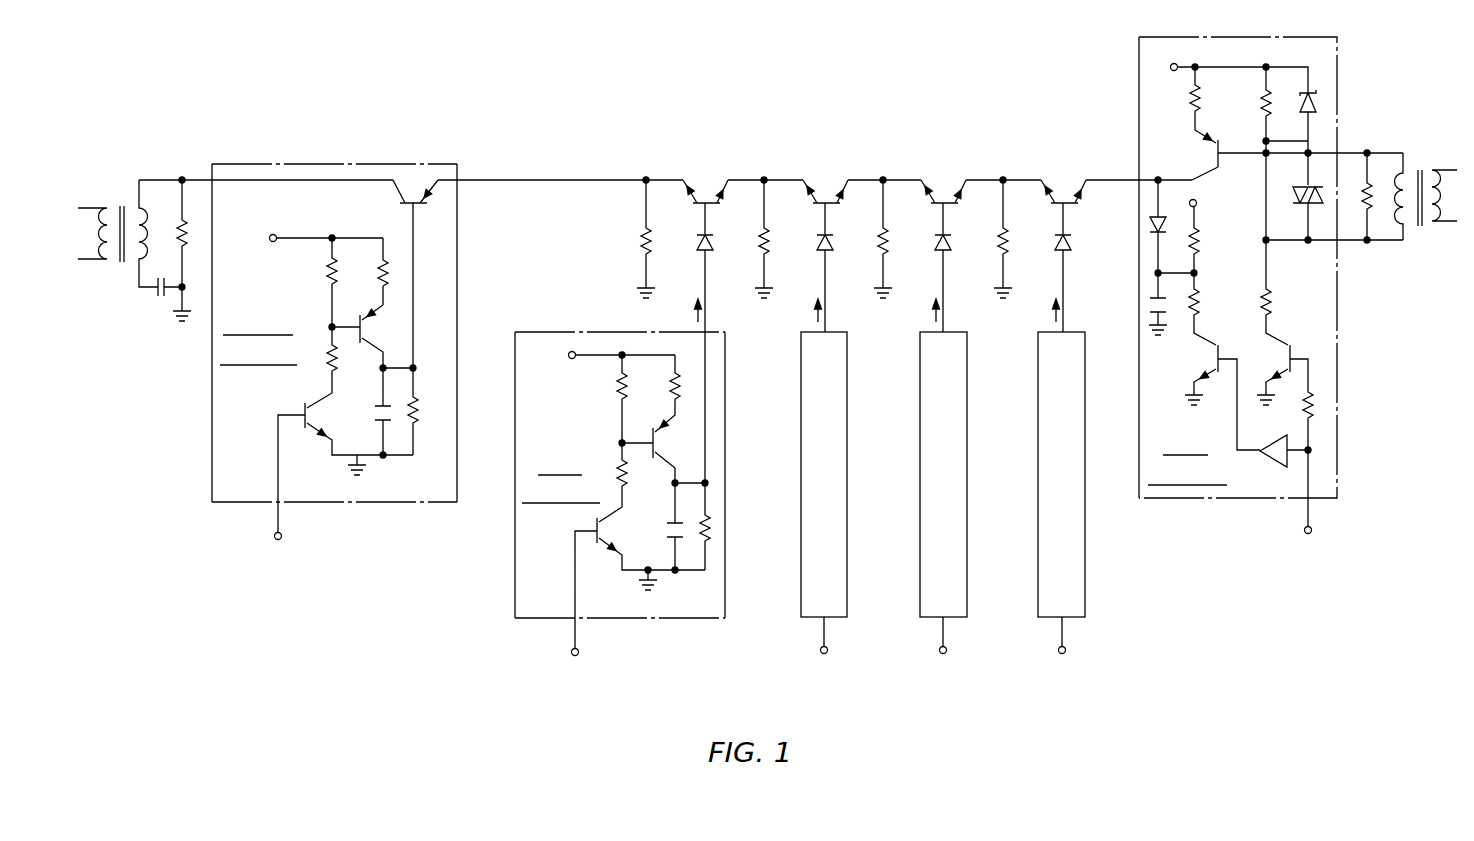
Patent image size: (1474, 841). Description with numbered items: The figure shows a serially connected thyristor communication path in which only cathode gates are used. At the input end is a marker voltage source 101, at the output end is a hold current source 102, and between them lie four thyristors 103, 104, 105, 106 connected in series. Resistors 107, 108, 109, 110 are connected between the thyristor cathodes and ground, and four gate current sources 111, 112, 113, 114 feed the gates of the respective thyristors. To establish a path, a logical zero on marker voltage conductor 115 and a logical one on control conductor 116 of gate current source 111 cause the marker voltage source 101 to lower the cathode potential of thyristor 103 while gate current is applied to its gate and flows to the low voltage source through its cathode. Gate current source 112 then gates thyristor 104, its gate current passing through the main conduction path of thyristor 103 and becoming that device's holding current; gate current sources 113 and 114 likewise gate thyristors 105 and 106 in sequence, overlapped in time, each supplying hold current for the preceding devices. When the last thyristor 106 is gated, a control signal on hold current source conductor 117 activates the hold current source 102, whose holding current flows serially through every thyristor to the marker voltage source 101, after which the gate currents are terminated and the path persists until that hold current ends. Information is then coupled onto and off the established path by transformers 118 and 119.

The marker voltage source 101 is at (333, 163).
The hold current source 102 is at (1139, 97).
The thyristor 103 is at (706, 178).
The thyristor 104 is at (826, 178).
The thyristor 105 is at (944, 178).
The thyristor 106 is at (1064, 178).
The resistor 107 is at (656, 245).
The resistor 108 is at (771, 245).
The resistor 109 is at (890, 245).
The resistor 110 is at (1009, 245).
The gate current source 111 is at (515, 479).
The gate current source 112 is at (801, 479).
The gate current source 113 is at (920, 476).
The gate current source 114 is at (1038, 476).
The marker voltage conductor 115 is at (280, 521).
The control conductor 116 is at (575, 636).
The hold current source conductor 117 is at (1308, 518).
The transformer 118 is at (127, 208).
The transformer 119 is at (1420, 168).